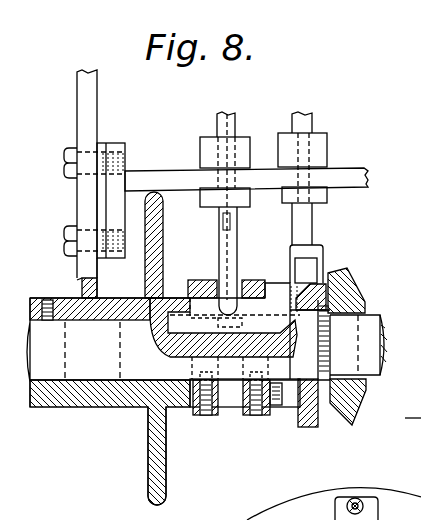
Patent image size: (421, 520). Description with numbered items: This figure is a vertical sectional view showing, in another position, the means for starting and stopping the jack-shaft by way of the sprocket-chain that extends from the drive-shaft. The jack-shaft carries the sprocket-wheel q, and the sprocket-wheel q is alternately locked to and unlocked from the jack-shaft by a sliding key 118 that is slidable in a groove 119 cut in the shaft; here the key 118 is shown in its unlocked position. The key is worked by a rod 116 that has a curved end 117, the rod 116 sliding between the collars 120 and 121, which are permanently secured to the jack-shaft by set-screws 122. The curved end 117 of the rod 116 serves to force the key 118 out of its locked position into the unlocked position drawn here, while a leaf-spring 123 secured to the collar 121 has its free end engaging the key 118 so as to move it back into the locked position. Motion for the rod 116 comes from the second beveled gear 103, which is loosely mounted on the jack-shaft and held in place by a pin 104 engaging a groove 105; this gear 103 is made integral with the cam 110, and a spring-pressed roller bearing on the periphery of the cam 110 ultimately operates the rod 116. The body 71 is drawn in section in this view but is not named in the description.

The casing body 71 is at (106, 367).
The groove 119 is at (180, 328).
The sprocket-wheel q is at (152, 448).
The rod 116 is at (235, 248).
The curved end 117 is at (228, 302).
The sliding key 118 is at (247, 279).
The pin 104 is at (329, 282).
The groove 105 is at (331, 332).
The second beveled gear 103 is at (351, 406).
The cam 110 is at (309, 417).
The collar 120 is at (213, 418).
The collar 121 is at (246, 412).
The set-screws 122 is at (203, 417).
The leaf-spring 123 is at (277, 408).